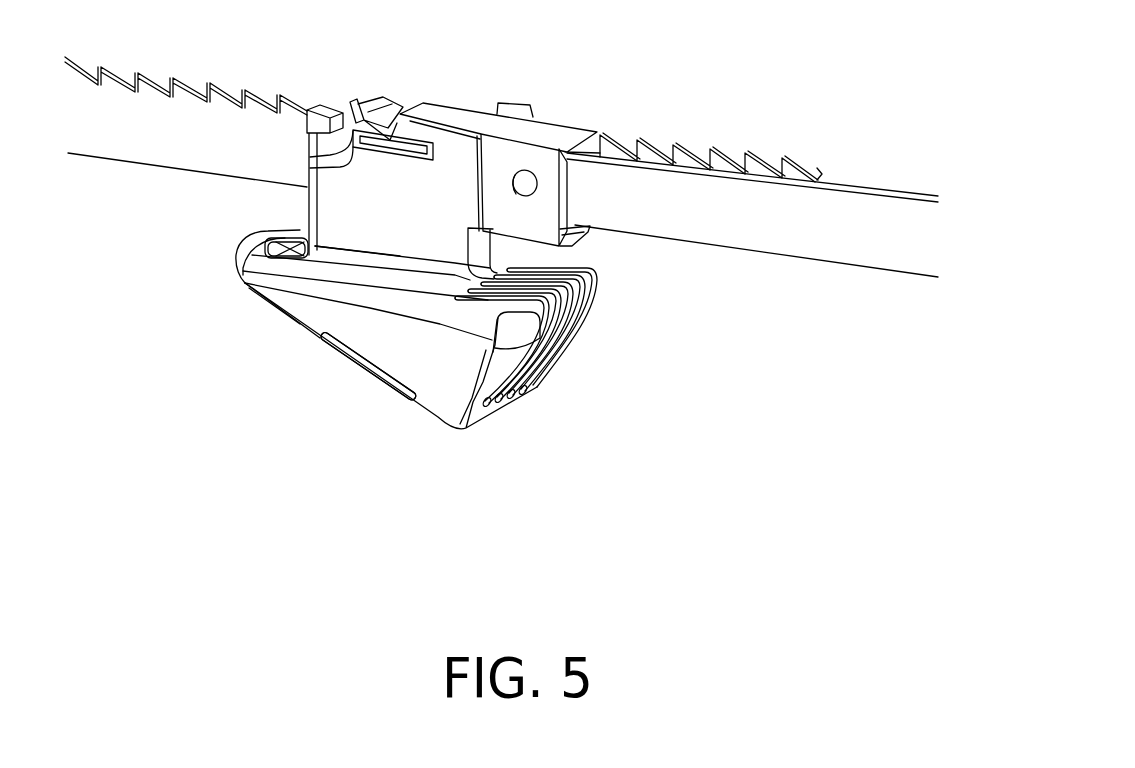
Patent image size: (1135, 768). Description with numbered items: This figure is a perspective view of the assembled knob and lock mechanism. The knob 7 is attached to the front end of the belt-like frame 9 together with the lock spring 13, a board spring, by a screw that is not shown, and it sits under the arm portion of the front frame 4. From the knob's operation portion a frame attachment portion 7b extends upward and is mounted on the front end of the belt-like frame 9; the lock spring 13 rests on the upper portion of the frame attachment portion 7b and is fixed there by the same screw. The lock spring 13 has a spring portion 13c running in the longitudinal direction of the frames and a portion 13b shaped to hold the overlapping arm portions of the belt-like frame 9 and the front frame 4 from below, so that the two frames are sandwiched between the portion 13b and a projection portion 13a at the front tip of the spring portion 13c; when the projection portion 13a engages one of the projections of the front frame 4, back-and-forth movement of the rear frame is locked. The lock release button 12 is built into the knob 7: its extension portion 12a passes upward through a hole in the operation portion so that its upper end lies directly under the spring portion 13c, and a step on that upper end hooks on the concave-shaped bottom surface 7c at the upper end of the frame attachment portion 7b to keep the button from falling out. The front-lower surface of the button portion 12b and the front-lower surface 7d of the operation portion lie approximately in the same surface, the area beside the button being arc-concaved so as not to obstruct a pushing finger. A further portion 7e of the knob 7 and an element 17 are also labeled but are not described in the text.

The front frame 4 is at (220, 118).
The knob 7 is at (449, 393).
The frame attachment portion 7b is at (350, 226).
The concave-shaped bottom surface 7c is at (310, 157).
The front-lower surface 7d is at (265, 308).
The rib fins 7e is at (543, 382).
The belt-like frame 9 is at (768, 232).
The lock release button 12 is at (356, 357).
The extension portion 12a is at (310, 168).
The button portion 12b is at (369, 366).
The lock spring 13 is at (563, 133).
The projection portion 13a is at (380, 98).
The holding portion 13b is at (578, 242).
The spring portion 13c is at (460, 108).
The rack teeth (right) 17 is at (640, 132).